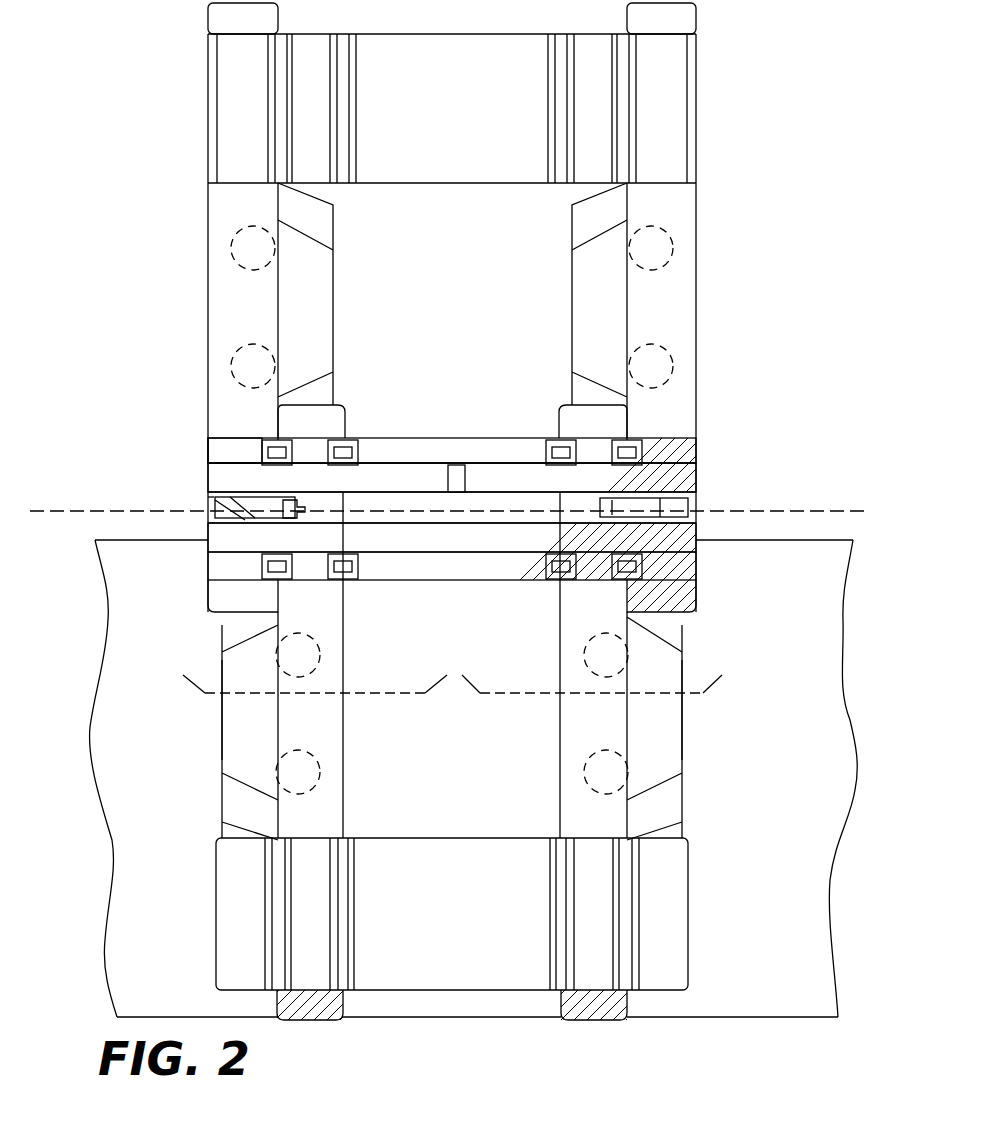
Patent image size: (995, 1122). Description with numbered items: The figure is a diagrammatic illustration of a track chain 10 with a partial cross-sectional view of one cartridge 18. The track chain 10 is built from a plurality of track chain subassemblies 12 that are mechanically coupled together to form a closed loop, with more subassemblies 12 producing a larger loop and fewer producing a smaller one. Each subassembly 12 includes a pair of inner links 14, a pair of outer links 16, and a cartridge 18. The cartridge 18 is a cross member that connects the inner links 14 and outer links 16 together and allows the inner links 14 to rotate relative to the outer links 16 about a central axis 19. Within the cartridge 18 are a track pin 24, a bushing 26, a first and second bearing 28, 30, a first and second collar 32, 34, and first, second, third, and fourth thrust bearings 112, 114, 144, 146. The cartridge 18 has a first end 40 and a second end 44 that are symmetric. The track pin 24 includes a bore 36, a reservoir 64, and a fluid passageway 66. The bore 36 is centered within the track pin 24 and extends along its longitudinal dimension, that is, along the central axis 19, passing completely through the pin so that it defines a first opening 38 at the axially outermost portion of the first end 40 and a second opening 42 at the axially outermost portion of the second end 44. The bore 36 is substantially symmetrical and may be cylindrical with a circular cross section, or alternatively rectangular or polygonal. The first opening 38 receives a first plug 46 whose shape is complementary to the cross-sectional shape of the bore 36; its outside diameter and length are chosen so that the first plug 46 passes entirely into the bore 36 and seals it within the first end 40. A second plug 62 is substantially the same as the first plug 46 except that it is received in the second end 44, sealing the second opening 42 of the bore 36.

The track chain 10 is at (777, 122).
The track chain subassembly 12 is at (92, 462).
The inner link 14 is at (345, 718).
The outer link 16 is at (208, 303).
The cartridge 18 is at (720, 433).
The central axis 19 is at (832, 510).
The track pin 24 is at (208, 487).
The bushing 26 is at (432, 437).
The first bearing 28 is at (332, 588).
The second bearing 30 is at (556, 588).
The first collar 32 is at (208, 562).
The second collar 34 is at (697, 575).
The bore 36 is at (445, 583).
The first opening 38 is at (193, 523).
The first end 40 is at (305, 697).
The second opening 42 is at (714, 498).
The second end 44 is at (612, 697).
The first plug 46 is at (208, 442).
The second plug 62 is at (645, 440).
The reservoir 64 is at (452, 665).
The fluid passageway 66 is at (468, 492).
The first thrust bearing 112 is at (358, 440).
The second thrust bearing 114 is at (266, 440).
The third thrust bearing 144 is at (533, 457).
The fourth thrust bearing 146 is at (608, 445).